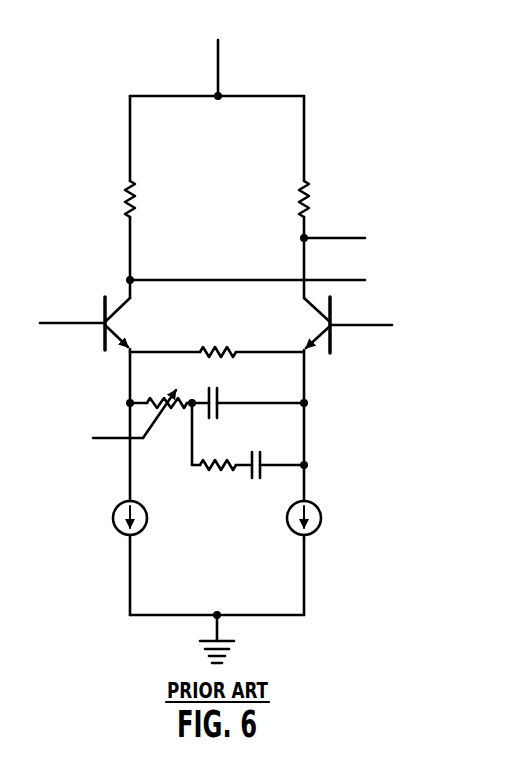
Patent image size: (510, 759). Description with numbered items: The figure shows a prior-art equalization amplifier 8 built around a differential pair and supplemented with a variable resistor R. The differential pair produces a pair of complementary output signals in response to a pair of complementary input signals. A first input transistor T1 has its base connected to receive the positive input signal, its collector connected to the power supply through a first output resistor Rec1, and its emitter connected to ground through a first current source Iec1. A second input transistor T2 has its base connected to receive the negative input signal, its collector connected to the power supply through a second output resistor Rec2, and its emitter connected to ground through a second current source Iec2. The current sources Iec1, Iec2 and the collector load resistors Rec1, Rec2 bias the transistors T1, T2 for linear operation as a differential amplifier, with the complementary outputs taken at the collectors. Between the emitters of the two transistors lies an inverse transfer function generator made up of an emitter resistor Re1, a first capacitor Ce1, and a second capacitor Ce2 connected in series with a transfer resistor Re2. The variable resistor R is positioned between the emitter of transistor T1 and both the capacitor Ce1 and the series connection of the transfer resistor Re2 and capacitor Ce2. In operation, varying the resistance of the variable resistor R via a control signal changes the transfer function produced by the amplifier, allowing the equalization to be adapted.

The equalization amplifier 8 is at (377, 70).
The first output resistor Rec1 is at (155, 200).
The second output resistor Rec2 is at (278, 200).
The first input transistor T1 is at (125, 323).
The second input transistor T2 is at (307, 325).
The emitter resistor Re1 is at (218, 337).
The variable resistor R is at (165, 402).
The first capacitor Ce1 is at (230, 397).
The transfer resistor Re2 is at (217, 481).
The second capacitor Ce2 is at (253, 451).
The first current source Iec1 is at (105, 518).
The second current source Iec2 is at (326, 519).